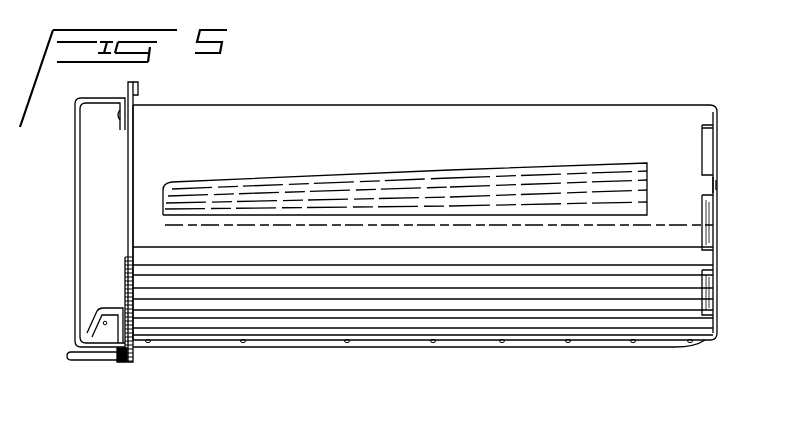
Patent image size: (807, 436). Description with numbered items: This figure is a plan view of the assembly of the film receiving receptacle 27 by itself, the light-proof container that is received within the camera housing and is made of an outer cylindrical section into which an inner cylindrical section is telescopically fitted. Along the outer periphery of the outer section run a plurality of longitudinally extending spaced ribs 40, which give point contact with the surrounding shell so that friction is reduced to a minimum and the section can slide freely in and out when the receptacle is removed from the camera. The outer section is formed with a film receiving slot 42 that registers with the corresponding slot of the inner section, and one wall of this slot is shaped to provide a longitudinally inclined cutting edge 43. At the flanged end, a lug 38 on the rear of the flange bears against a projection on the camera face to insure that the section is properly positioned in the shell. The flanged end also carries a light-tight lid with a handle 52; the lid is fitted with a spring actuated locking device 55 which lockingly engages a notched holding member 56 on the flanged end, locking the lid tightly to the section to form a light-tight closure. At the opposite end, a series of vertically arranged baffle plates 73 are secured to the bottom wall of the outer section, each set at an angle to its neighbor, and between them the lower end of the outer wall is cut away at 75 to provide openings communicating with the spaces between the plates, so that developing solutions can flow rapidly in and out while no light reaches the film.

The film container or receptacle 27 is at (381, 292).
The lug 38 is at (138, 88).
The longitudinally extending spaced ribs 40 is at (477, 347).
The film receiving slot 42 is at (450, 215).
The longitudinally inclined cutting edge 43 is at (337, 183).
The handle 52 is at (75, 220).
The spring actuated locking device 55 is at (103, 337).
The notched holding member 56 is at (118, 365).
The baffle plates 73 is at (707, 233).
The cut away portion 75 is at (712, 250).